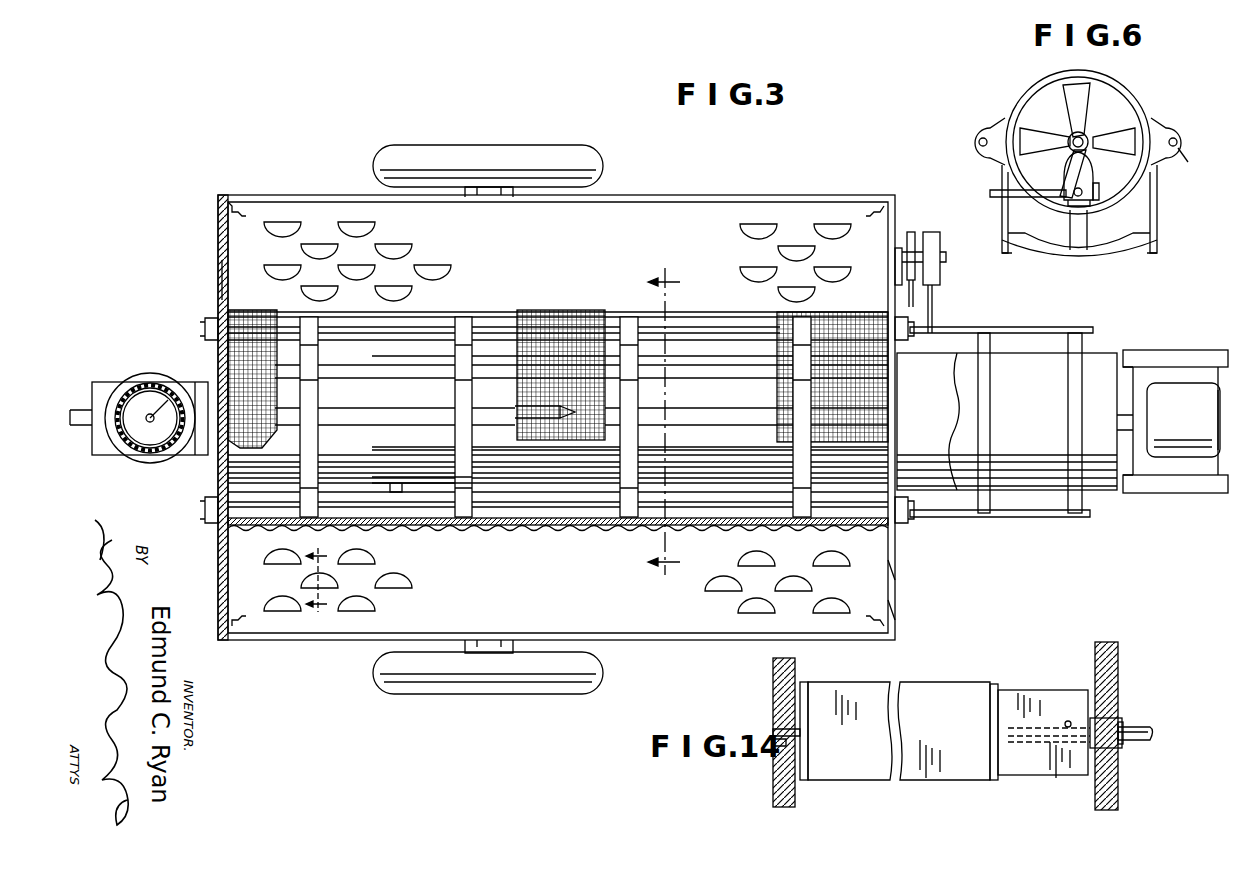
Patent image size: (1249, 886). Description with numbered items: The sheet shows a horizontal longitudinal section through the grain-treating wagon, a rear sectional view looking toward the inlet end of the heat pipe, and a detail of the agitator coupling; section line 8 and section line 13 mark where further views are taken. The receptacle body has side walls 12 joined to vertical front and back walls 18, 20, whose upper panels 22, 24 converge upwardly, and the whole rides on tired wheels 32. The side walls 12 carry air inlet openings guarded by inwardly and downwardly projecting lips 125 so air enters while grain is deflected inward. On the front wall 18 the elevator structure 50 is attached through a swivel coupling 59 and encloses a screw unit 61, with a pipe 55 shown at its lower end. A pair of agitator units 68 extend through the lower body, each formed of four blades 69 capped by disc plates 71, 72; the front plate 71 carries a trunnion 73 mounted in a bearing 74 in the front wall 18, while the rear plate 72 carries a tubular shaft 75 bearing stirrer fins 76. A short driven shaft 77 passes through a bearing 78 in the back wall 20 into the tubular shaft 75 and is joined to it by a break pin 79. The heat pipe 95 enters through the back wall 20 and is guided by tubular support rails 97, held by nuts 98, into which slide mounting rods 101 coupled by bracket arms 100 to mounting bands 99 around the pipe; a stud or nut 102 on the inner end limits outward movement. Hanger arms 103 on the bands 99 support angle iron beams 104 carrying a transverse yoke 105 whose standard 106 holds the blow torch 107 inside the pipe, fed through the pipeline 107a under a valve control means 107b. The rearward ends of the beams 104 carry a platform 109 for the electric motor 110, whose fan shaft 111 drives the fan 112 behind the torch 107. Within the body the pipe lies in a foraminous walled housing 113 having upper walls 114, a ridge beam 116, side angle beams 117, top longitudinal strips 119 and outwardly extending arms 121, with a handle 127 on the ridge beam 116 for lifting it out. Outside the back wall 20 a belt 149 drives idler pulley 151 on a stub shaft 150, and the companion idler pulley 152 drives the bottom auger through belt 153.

In FIG. 3, the section line 8- 8 is at (664, 420).
In FIG. 3, the side walls 12 is at (718, 200).
In FIG. 3, the section line 13- 13 is at (318, 580).
In FIG. 3, the front wall 18 is at (218, 234).
In FIG. 14, the front wall 18 is at (772, 678).
In FIG. 3, the back wall 20 is at (898, 600).
In FIG. 14, the back wall 20 is at (1120, 660).
In FIG. 3, the upstanding panel 22 is at (220, 270).
In FIG. 3, the upstanding panel 24 is at (898, 572).
In FIG. 3, the tired wheel 32 is at (484, 163).
In FIG. 3, the elevator structure 50 is at (130, 388).
In FIG. 3, the pipe 55 is at (80, 404).
In FIG. 3, the swivel coupling 59 is at (134, 466).
In FIG. 3, the screw or auger unit 61 is at (160, 384).
In FIG. 14, the agitator unit 68 is at (866, 682).
In FIG. 14, the blades 69 is at (950, 698).
In FIG. 14, the disc plate 71 is at (804, 700).
In FIG. 14, the disc plate 72 is at (996, 686).
In FIG. 14, the trunnion 73 is at (776, 730).
In FIG. 14, the bearing 74 is at (778, 746).
In FIG. 14, the tubular shaft 75 is at (1050, 742).
In FIG. 14, the stirrer fins 76 is at (1082, 702).
In FIG. 14, the driven shaft 77 is at (1142, 730).
In FIG. 14, the bearing 78 is at (1112, 748).
In FIG. 14, the break pin 79 is at (1068, 720).
In FIG. 3, the heat pipe 95 is at (1030, 478).
In FIG. 3, the tubular support rails 97 is at (732, 328).
In FIG. 3, the nuts 98 is at (212, 318).
In FIG. 3, the mounting bands 99 is at (1072, 402).
In FIG. 6, the mounting bands 99 is at (1140, 102).
In FIG. 3, the bracket arms 100 is at (1074, 340).
In FIG. 6, the bracket arms 100 is at (996, 122).
In FIG. 3, the mounting rods 101 is at (986, 327).
In FIG. 6, the mounting rods 101 is at (1195, 163).
In FIG. 3, the stud or nut 102 is at (400, 492).
In FIG. 6, the hanger arms 103 is at (1158, 223).
In FIG. 3, the angle iron beams 104 is at (1192, 490).
In FIG. 6, the angle iron beams 104 is at (1150, 254).
In FIG. 6, the transverse yoke 105 is at (1056, 252).
In FIG. 6, the standard 106 is at (1082, 232).
In FIG. 6, the blow torch 107 is at (1088, 170).
In FIG. 6, the pipeline 107a is at (994, 192).
In FIG. 6, the valve control means 107b is at (1102, 200).
In FIG. 3, the platform 109 is at (1170, 372).
In FIG. 3, the electric motor 110 is at (1183, 420).
In FIG. 6, the fan shaft 111 is at (1070, 134).
In FIG. 6, the fan 112 is at (1086, 98).
In FIG. 3, the foraminous walled housing 113 is at (498, 318).
In FIG. 3, the upper walls 114 is at (575, 330).
In FIG. 3, the ridge beam 116 is at (400, 424).
In FIG. 3, the angle beam 117 is at (698, 316).
In FIG. 3, the top longitudinal strips 119 is at (328, 380).
In FIG. 3, the arms 121 is at (308, 325).
In FIG. 3, the lips 125 is at (432, 270).
In FIG. 3, the handle 127 is at (548, 410).
In FIG. 3, the belt 149 is at (896, 288).
In FIG. 3, the stub shaft 150 is at (946, 256).
In FIG. 3, the idler pulley 151 is at (912, 230).
In FIG. 3, the idler pulley 152 is at (934, 232).
In FIG. 3, the belt 153 is at (934, 300).